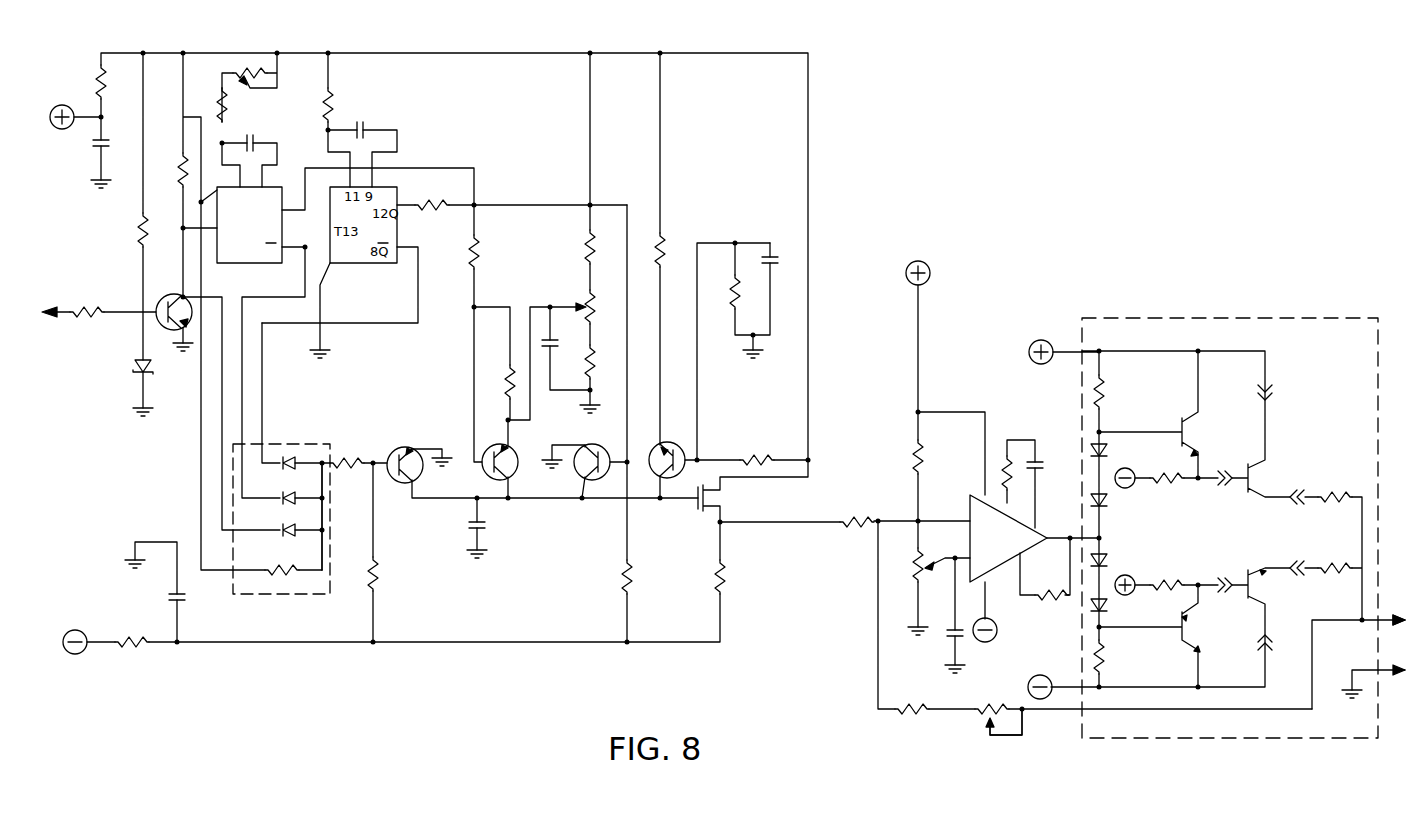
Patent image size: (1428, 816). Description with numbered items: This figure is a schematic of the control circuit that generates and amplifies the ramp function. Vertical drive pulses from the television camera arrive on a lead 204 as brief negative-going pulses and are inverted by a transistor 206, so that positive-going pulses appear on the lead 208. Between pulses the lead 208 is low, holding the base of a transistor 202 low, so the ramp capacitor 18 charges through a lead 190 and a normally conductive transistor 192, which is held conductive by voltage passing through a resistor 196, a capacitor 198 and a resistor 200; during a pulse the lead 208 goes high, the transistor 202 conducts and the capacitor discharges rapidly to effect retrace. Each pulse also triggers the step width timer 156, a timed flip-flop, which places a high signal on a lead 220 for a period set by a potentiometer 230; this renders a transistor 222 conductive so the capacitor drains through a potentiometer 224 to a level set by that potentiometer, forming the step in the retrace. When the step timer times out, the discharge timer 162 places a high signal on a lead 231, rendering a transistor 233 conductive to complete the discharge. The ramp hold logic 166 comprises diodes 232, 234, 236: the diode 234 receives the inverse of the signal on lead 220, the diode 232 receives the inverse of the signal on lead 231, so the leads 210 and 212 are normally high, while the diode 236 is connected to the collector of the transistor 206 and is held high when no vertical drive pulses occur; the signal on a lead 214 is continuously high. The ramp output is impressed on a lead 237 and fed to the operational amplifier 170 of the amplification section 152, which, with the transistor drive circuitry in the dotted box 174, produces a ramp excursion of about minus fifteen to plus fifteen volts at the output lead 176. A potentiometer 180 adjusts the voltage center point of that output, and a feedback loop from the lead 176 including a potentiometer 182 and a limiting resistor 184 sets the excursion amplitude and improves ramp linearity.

The capacitor 18 is at (486, 530).
The amplification section 152 is at (1054, 648).
The step width timer 156 is at (246, 264).
The discharge timer 162 is at (402, 232).
The ramp hold logic 166 is at (276, 606).
The operational amplifier 170 is at (1015, 522).
The transistor drive circuitry 174 is at (1304, 316).
The output lead 176 is at (1346, 620).
The potentiometer 180 is at (917, 576).
The potentiometer 182 is at (980, 712).
The limiting resistor 184 is at (889, 711).
The lead 190 is at (665, 162).
The transistor 192 is at (690, 445).
The resistor 196 is at (775, 458).
The capacitor 198 is at (778, 264).
The resistor 200 is at (735, 310).
The transistor 202 is at (391, 457).
The lead 204 is at (68, 312).
The transistor 206 is at (183, 332).
The lead 208 is at (222, 499).
The lead 210 is at (244, 385).
The lead 212 is at (263, 416).
The lead 214 is at (323, 555).
The lead 220 is at (305, 168).
The transistor 222 is at (494, 483).
The potentiometer 224 is at (584, 305).
The potentiometer 230 is at (251, 72).
The lead 231 is at (508, 205).
The diode 232 is at (288, 470).
The transistor 233 is at (676, 446).
The diode 234 is at (288, 505).
The diode 236 is at (288, 537).
The lead 237 is at (768, 526).